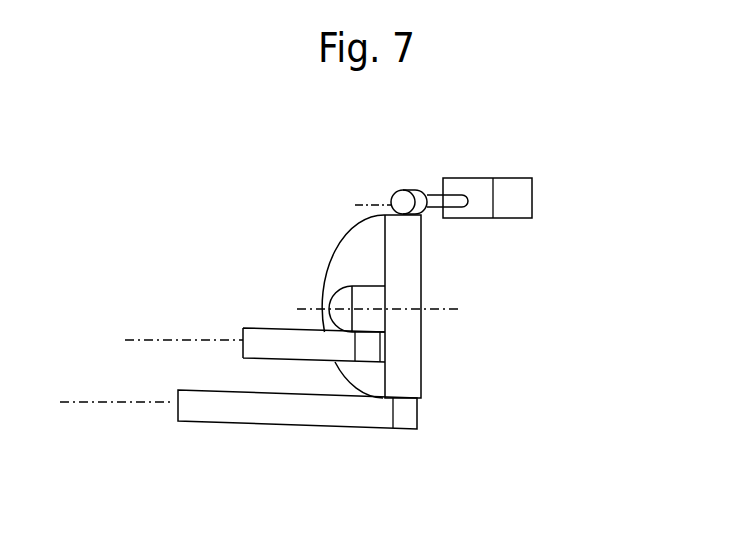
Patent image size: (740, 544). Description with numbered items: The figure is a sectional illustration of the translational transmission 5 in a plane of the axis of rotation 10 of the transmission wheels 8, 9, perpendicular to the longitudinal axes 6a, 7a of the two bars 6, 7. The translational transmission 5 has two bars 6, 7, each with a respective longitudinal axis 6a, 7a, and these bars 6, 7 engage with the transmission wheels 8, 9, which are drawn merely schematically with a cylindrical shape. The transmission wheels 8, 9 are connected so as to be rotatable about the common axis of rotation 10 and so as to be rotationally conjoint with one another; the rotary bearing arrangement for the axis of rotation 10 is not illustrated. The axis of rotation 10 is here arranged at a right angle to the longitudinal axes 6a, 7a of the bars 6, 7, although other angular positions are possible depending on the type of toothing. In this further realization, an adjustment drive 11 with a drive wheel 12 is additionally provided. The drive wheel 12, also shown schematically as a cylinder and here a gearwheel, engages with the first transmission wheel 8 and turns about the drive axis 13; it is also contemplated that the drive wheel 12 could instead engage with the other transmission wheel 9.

The translational transmission 5 is at (290, 150).
The bar 6 is at (258, 338).
The longitudinal axis 6a is at (145, 340).
The bar 7 is at (198, 412).
The longitudinal axis 7a is at (82, 402).
The transmission wheel 8 is at (350, 242).
The transmission wheel 9 is at (338, 298).
The axis of rotation 10 is at (297, 310).
The adjustment drive 11 is at (493, 178).
The drive wheel 12 is at (418, 197).
The drive axis 13 is at (363, 205).